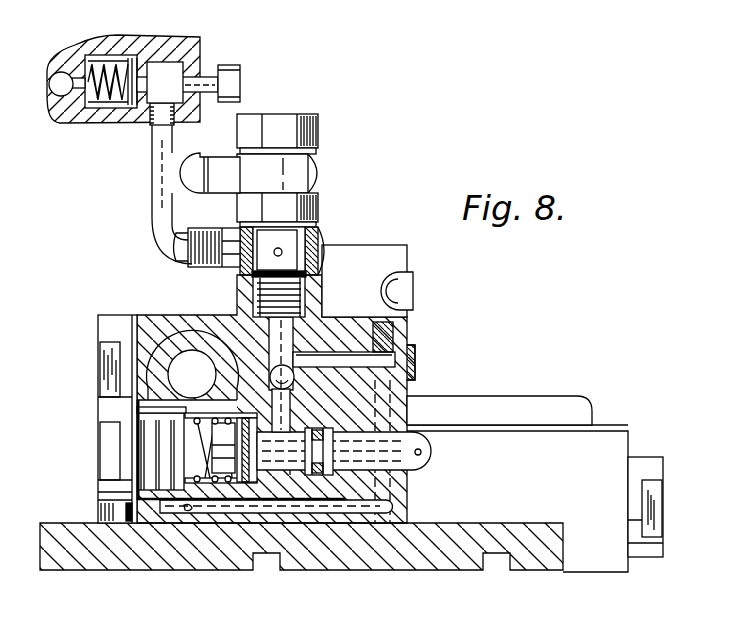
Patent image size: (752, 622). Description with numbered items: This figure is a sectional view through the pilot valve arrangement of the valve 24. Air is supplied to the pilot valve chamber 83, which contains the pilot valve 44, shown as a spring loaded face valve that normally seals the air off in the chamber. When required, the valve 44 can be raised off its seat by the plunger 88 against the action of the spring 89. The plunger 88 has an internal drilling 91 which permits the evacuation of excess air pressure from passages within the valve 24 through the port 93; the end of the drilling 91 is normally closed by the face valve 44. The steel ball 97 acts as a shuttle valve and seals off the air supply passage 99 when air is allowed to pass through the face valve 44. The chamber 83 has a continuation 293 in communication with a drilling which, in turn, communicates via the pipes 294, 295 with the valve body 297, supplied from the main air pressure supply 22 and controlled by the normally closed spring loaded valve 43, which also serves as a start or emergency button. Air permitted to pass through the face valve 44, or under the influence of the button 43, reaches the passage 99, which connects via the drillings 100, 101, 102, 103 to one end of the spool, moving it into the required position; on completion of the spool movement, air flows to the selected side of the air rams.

The main air pressure supply 22 is at (67, 97).
The valve 24 is at (410, 382).
The spring loaded valve 43 is at (240, 72).
The pilot valve 44 is at (250, 473).
The pilot valve chamber 83 is at (197, 455).
The plunger 88 is at (431, 466).
The spring 89 is at (215, 418).
The internal drilling 91 is at (418, 432).
The port 93 is at (421, 452).
The steel ball 97 is at (249, 333).
The air supply passage 99 is at (292, 340).
The drilling 100 is at (390, 337).
The drilling 101 is at (414, 376).
The drilling 102 is at (390, 507).
The drilling 103 is at (187, 511).
The chamber continuation 293 is at (290, 472).
The pipe 294 is at (184, 163).
The pipe 295 is at (152, 194).
The valve body 297 is at (166, 53).